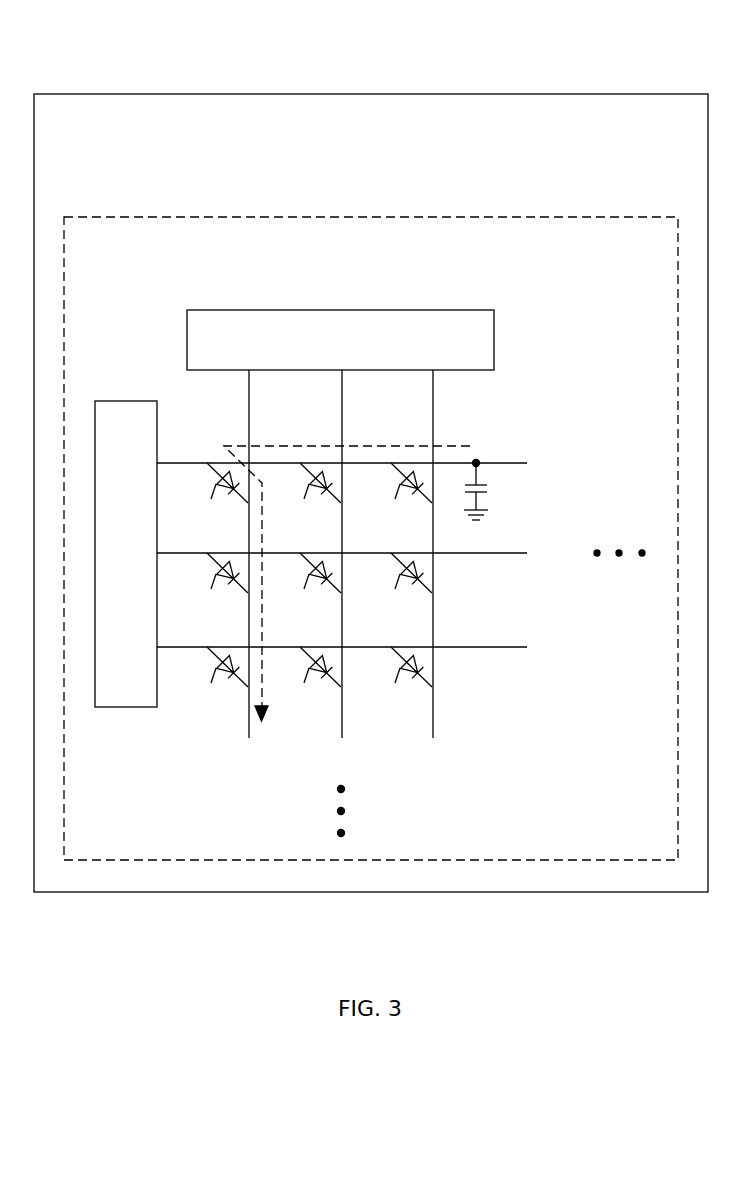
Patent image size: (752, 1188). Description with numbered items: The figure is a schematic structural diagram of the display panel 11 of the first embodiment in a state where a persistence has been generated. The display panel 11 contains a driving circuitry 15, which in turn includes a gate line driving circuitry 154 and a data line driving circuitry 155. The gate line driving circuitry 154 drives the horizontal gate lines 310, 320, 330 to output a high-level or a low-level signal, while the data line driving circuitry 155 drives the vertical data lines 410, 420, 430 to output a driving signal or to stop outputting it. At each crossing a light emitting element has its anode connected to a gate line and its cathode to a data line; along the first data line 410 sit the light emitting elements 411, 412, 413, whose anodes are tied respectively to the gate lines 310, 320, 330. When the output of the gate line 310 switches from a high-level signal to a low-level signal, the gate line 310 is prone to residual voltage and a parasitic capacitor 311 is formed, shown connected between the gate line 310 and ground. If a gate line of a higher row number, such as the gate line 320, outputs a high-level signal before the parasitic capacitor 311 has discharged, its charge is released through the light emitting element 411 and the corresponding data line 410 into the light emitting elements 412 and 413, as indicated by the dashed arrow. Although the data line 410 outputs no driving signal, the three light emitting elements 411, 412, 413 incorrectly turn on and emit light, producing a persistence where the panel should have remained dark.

The display panel 11 is at (372, 94).
The driving circuitry 15 is at (372, 217).
The gate line driving circuitry 154 is at (127, 401).
The data line driving circuitry 155 is at (433, 310).
The gate line 310 is at (365, 465).
The gate line 320 is at (365, 555).
The gate line 330 is at (365, 650).
The parasitic capacitor 311 is at (485, 485).
The data line 410 is at (250, 568).
The data line 420 is at (341, 568).
The data line 430 is at (433, 568).
The light emitting element 411 is at (211, 494).
The light emitting element 412 is at (211, 585).
The light emitting element 413 is at (211, 678).